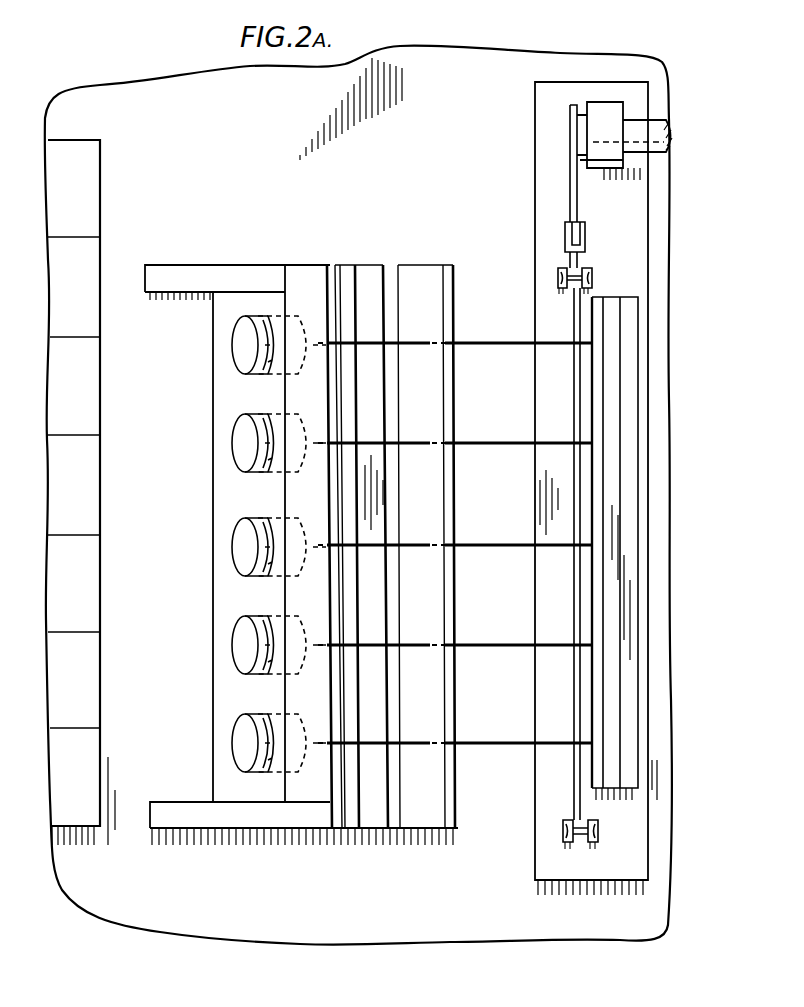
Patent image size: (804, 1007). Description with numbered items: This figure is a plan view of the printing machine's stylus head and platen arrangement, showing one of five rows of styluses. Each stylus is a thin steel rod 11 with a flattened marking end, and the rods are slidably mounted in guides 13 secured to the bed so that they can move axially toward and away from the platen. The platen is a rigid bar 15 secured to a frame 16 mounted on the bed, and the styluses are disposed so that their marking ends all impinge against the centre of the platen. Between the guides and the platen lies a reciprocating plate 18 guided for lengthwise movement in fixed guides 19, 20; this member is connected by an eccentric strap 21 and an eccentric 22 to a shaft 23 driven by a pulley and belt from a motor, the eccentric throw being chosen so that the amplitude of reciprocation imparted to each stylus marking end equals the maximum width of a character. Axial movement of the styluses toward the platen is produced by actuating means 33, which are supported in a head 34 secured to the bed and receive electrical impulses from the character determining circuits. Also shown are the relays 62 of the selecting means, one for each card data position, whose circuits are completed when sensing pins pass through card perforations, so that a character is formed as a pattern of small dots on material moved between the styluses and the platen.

The thin steel rod 11 is at (495, 345).
The guides 13 is at (443, 280).
The rigid bar 15 is at (600, 776).
The frame 16 is at (549, 866).
The plate 18 is at (573, 396).
The fixed guide 19 is at (588, 276).
The fixed guide 20 is at (584, 843).
The eccentric strap 21 is at (572, 190).
The eccentric 22 is at (587, 140).
The shaft 23 is at (660, 130).
The actuating means 33 is at (245, 347).
The head 34 is at (222, 315).
The relays 62 is at (80, 212).